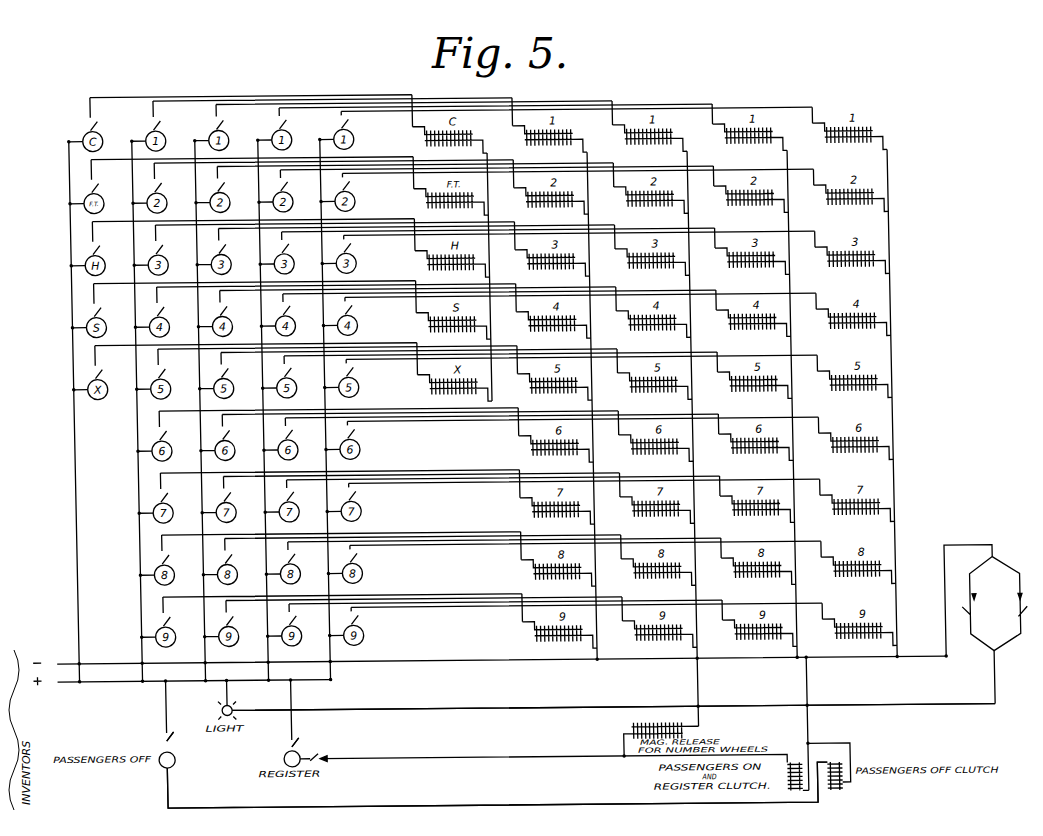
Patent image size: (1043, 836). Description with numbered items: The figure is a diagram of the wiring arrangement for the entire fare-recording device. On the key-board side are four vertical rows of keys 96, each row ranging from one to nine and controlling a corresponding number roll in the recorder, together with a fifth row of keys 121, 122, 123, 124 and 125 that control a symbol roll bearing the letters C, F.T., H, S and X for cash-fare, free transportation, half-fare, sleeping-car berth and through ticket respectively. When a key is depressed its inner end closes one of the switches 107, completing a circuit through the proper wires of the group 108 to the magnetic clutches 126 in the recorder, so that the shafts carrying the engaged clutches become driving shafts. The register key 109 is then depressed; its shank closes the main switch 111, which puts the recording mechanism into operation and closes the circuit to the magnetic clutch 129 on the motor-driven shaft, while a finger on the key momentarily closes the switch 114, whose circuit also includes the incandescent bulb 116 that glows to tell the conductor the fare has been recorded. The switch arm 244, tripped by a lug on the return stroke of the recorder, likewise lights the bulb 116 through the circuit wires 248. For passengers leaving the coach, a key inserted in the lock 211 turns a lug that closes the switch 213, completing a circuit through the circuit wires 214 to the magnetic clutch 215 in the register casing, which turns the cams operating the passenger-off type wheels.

The key 121 is at (88, 138).
The key 122 is at (88, 200).
The key 123 is at (88, 262).
The key 124 is at (88, 324).
The key 125 is at (88, 386).
The keys 96 is at (171, 137).
The switches 107 is at (164, 307).
The group of wires 108 is at (392, 281).
The magnetic clutches 126 is at (460, 147).
The circuit wires 214 is at (160, 702).
The switch 213 is at (168, 728).
The lock 211 is at (168, 757).
The incandescent bulb 116 is at (229, 705).
The register key 109 is at (277, 756).
The switch 114 is at (292, 737).
The main switch 111 is at (311, 752).
The circuit wires 248 is at (412, 708).
The switch arm 244 is at (960, 616).
The magnetic clutch 129 is at (788, 765).
The magnetic clutch 215 is at (838, 788).